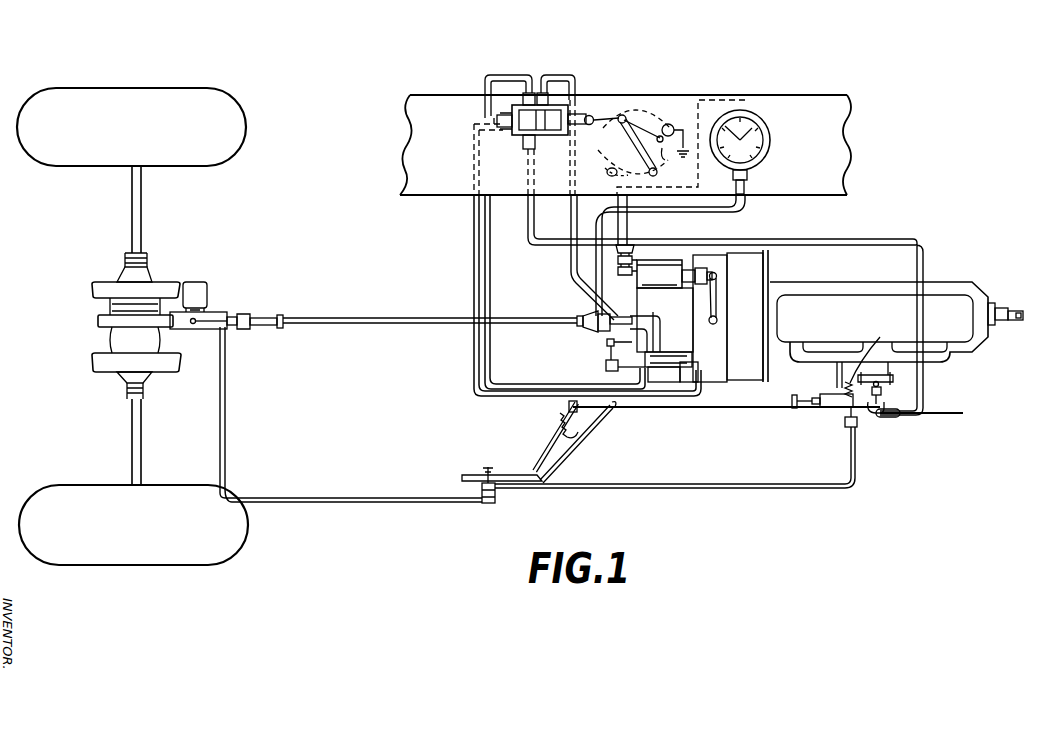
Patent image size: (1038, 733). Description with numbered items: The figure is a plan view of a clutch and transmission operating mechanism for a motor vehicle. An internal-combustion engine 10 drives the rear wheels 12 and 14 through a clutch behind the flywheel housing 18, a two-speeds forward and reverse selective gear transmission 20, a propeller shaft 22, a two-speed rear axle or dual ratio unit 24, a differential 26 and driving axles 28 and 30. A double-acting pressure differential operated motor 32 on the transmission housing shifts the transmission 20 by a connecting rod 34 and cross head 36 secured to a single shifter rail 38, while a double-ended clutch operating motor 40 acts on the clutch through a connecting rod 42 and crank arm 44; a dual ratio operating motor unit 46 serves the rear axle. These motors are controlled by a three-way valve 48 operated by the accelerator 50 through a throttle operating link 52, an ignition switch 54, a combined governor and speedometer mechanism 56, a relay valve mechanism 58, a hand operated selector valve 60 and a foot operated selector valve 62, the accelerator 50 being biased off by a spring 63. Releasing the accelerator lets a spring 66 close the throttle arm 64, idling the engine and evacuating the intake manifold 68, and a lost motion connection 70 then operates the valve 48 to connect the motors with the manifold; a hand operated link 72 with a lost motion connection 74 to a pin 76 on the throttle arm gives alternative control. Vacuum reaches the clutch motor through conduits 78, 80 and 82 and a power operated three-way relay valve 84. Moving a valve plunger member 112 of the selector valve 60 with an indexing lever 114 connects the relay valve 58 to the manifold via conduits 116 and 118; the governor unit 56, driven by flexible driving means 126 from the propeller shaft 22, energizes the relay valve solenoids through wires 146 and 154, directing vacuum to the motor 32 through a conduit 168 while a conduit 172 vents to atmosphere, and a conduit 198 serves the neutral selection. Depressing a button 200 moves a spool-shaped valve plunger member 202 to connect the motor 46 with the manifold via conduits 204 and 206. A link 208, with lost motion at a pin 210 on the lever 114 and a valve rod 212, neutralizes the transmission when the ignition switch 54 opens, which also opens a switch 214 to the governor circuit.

The internal-combustion engine 10 is at (937, 288).
The rear wheel 12 is at (160, 100).
The rear wheel 14 is at (147, 552).
The flywheel housing 18 is at (752, 282).
The two-speeds forward and reverse selective gear transmission 20 is at (723, 333).
The propeller shaft 22 is at (367, 322).
The dual ratio unit 24 is at (165, 334).
The differential 26 is at (120, 337).
The driving axle 28 is at (128, 232).
The driving axle 30 is at (130, 425).
The transmission operating pressure differential operated motor 32 is at (686, 382).
The connecting rod 34 is at (635, 372).
The cross head 36 is at (606, 359).
The shifter rail 38 is at (604, 343).
The clutch operating pressure differential operated motor 40 is at (660, 273).
The connecting rod 42 is at (708, 270).
The crank arm 44 is at (716, 306).
The dual ratio operating pressure differential operated motor unit 46 is at (220, 313).
The three-way valve 48 is at (816, 410).
The accelerator 50 is at (552, 430).
The throttle operating link 52 is at (713, 410).
The ignition switch 54 is at (684, 118).
The combined governor and speedometer mechanism 56 is at (772, 135).
The relay valve mechanism 58 is at (593, 328).
The hand operated selector valve 60 is at (535, 78).
The foot operated selector valve 62 is at (482, 501).
The spring 63 is at (566, 438).
The throttle arm 64 is at (888, 388).
The spring 66 is at (869, 357).
The intake manifold 68 is at (953, 343).
The lost motion connection 70 is at (880, 405).
The hand operated link 72 is at (950, 416).
The lost motion connection 74 is at (895, 418).
The pin 76 is at (878, 416).
The conduit 78 is at (848, 428).
The conduit 80 is at (902, 240).
The conduit 82 is at (627, 258).
The power operated three-way relay valve 84 is at (627, 268).
The valve plunger member 112 is at (522, 132).
The indexing lever 114 is at (633, 150).
The conduit 116 is at (531, 220).
The conduit 118 is at (570, 248).
The flexible driving means 126 is at (748, 209).
The wire 146 is at (572, 228).
The wire 154 is at (630, 229).
The conduit 168 is at (678, 331).
The conduit 172 is at (645, 330).
The conduit 198 is at (474, 346).
The button 200 is at (488, 465).
The spool-shaped valve plunger member 202 is at (498, 503).
The conduit 204 is at (365, 500).
The conduit 206 is at (708, 490).
The link 208 is at (662, 96).
The pin 210 is at (616, 110).
The valve rod 212 is at (587, 112).
The switch 214 is at (676, 168).